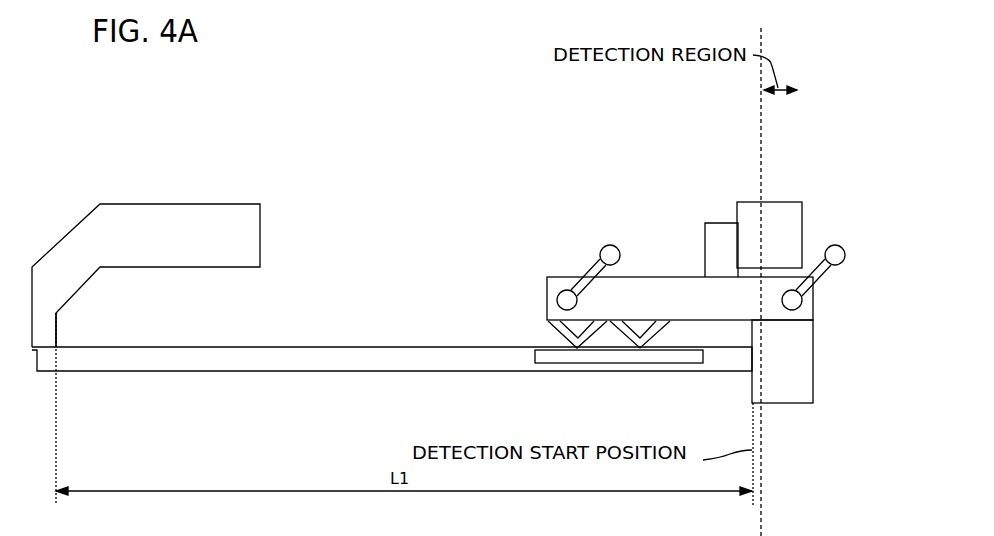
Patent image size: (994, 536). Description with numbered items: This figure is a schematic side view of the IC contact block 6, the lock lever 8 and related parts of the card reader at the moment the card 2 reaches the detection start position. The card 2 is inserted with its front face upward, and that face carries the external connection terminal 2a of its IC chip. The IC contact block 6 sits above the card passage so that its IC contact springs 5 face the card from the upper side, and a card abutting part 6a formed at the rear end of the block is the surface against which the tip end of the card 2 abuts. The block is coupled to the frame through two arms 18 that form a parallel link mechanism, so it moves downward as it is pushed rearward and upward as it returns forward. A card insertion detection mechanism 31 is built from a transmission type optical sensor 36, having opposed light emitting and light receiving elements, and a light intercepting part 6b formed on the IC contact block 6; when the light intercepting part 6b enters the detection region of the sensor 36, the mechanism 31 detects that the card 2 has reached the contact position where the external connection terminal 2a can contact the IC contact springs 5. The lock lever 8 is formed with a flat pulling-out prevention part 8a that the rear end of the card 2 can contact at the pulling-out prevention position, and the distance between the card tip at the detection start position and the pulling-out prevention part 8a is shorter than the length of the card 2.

The card 2 is at (339, 348).
The external connection terminal 2a is at (546, 348).
The IC contact spring 5 is at (575, 350).
The IC contact block 6 is at (560, 277).
The card abutting part 6a is at (785, 405).
The light intercepting part 6b is at (722, 222).
The lock lever 8 is at (180, 203).
The pulling-out prevention part 8a is at (57, 331).
The arm 18 is at (592, 270).
The card insertion detection mechanism 31 is at (743, 194).
The optical sensor 36 is at (750, 202).